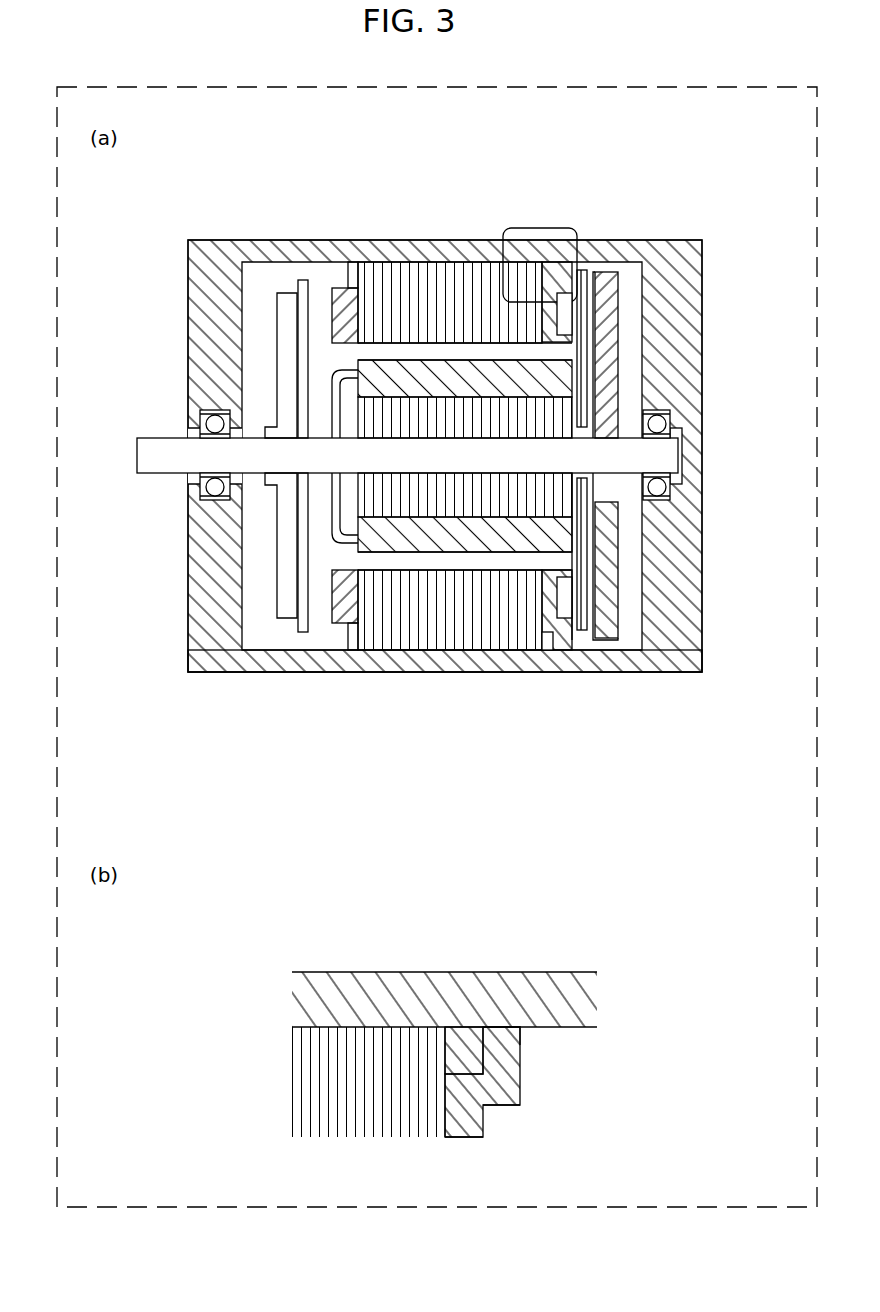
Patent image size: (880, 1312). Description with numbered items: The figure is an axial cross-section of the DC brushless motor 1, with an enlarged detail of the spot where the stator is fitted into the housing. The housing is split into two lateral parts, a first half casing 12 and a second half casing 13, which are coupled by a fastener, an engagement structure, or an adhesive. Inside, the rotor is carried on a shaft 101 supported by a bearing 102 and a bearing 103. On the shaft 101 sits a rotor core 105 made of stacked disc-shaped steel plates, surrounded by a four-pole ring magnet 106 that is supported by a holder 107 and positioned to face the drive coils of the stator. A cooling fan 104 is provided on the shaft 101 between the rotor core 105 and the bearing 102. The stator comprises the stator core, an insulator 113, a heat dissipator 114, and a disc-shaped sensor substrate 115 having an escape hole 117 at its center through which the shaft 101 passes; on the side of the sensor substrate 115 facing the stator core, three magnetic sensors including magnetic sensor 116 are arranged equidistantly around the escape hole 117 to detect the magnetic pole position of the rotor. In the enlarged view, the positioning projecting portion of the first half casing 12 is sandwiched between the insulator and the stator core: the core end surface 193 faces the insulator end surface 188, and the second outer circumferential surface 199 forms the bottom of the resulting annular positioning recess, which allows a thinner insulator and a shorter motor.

The DC brushless motor 1 is at (126, 194).
The first half casing 12 is at (215, 268).
The second half casing 13 is at (213, 650).
The shaft 101 is at (160, 445).
The bearing 102 is at (197, 487).
The bearing 103 is at (657, 425).
The cooling fan 104 is at (288, 300).
The rotor core 105 is at (556, 407).
The ring magnet 106 is at (553, 375).
The holder 107 is at (336, 376).
The insulator 113 is at (350, 298).
The heat dissipator 114 is at (617, 285).
The sensor substrate 115 is at (596, 270).
The magnetic sensor 116 is at (583, 537).
The escape hole 117 is at (583, 418).
The end surface 188 is at (490, 1037).
The core end surface 193 is at (460, 1128).
The second outer circumferential surface 199 is at (497, 1093).